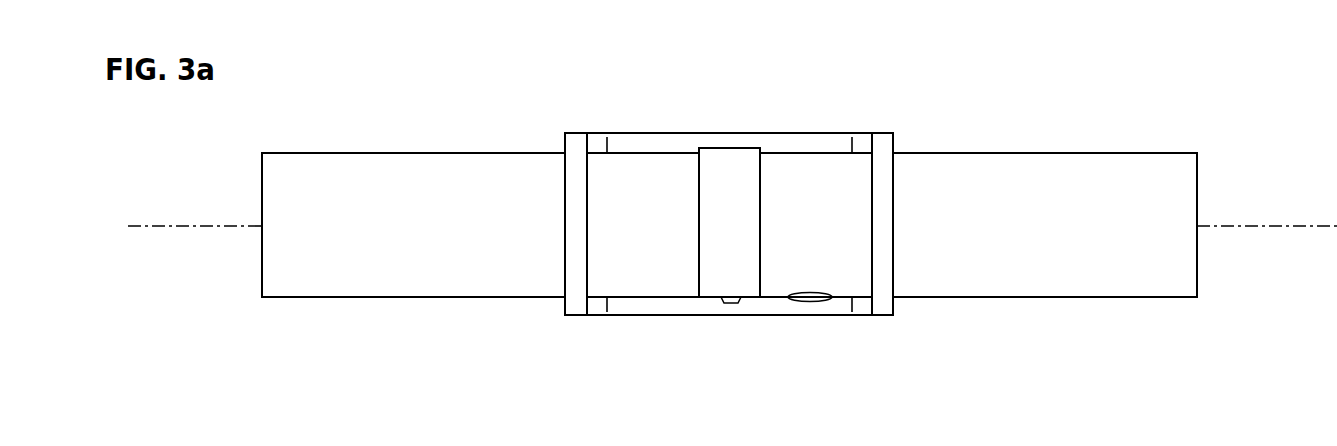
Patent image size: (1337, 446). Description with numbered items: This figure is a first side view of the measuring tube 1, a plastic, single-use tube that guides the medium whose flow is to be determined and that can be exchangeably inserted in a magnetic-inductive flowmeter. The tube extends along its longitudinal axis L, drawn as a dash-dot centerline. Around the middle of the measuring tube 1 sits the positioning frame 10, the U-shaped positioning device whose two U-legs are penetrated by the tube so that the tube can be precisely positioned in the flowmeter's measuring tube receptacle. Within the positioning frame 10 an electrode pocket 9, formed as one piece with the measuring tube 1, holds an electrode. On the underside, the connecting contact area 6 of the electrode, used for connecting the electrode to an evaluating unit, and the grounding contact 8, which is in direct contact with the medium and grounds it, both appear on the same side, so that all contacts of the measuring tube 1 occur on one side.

The measuring tube 1 is at (1209, 91).
The positioning frame 10 is at (642, 142).
The electrode pocket 9 is at (748, 187).
The connecting contact area 6 is at (730, 313).
The grounding contact 8 is at (810, 313).
The longitudinal axis L is at (1276, 226).